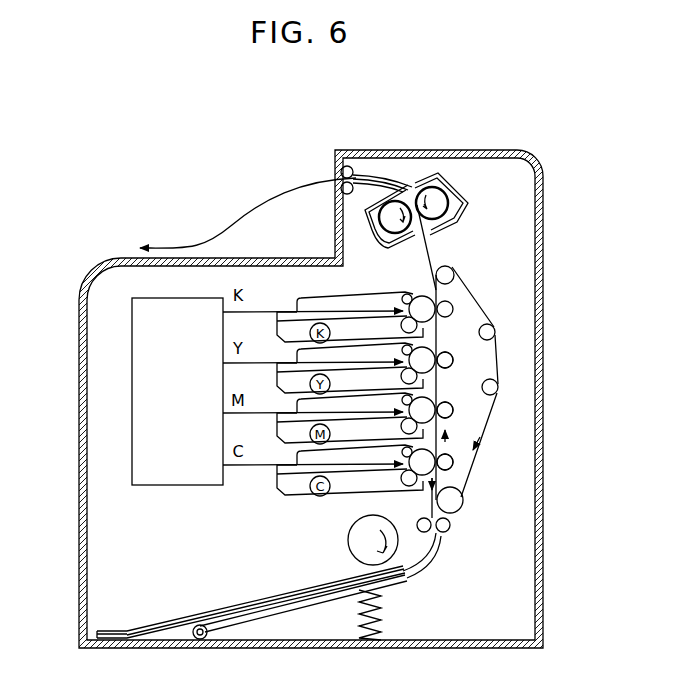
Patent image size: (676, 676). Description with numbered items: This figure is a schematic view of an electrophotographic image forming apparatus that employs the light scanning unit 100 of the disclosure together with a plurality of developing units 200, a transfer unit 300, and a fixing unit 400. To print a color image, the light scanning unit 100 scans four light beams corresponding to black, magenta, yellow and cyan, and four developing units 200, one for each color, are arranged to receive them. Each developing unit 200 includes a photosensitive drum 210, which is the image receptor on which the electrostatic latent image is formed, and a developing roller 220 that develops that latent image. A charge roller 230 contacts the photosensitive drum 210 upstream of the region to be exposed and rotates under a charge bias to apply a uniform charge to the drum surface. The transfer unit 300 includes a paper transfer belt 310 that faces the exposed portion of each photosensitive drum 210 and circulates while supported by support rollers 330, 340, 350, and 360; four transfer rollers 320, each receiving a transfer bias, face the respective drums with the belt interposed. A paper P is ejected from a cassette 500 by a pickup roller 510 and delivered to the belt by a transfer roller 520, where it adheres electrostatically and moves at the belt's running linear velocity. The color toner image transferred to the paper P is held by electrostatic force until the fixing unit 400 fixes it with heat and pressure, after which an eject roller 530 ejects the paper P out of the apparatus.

The light scanning unit 100 is at (126, 397).
The developing units 200 is at (365, 362).
The photosensitive drum 210 is at (421, 299).
The developing roller 220 is at (402, 321).
The charge roller 230 is at (405, 294).
The transfer unit 300 is at (515, 377).
The paper transfer belt 310 is at (477, 302).
The transfer rollers 320 is at (467, 390).
The support roller 330 is at (455, 500).
The support roller 340 is at (455, 276).
The support roller 350 is at (499, 388).
The support roller 360 is at (496, 333).
The fixing unit 400 is at (481, 203).
The cassette 500 is at (273, 571).
The pickup roller 510 is at (372, 541).
The transfer roller 520 is at (418, 523).
The eject roller 530 is at (349, 164).
The paper P is at (265, 597).